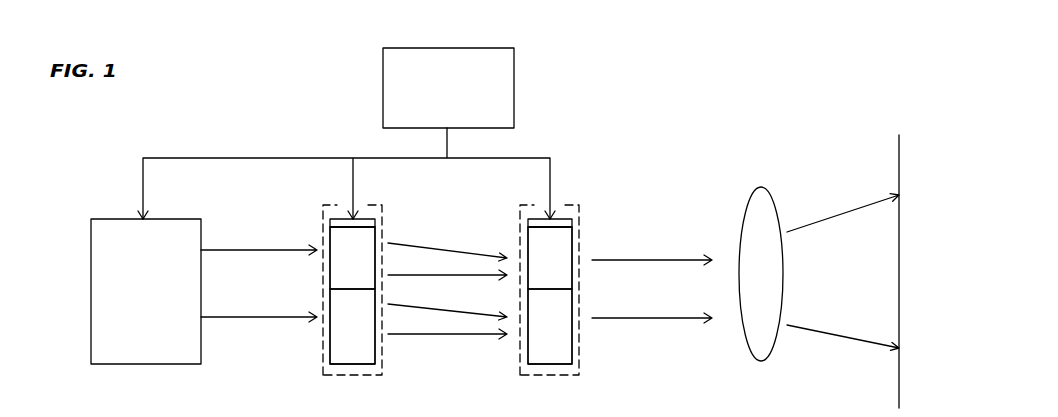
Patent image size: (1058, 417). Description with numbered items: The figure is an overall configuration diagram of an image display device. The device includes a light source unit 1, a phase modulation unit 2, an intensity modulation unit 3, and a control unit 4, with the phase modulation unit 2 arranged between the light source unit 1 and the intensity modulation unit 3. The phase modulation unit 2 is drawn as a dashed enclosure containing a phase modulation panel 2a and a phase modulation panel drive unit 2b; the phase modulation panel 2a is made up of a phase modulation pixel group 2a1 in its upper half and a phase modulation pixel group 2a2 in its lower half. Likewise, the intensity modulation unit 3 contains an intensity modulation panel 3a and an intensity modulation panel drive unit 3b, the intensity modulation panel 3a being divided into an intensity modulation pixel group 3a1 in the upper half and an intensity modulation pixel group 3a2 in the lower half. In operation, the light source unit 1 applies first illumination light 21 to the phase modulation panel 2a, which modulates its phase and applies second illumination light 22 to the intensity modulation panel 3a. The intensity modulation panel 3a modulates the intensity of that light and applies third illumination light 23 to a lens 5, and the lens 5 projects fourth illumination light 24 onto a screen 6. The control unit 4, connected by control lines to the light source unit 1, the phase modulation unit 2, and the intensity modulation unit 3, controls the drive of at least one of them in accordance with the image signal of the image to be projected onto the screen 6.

The light source unit 1 is at (118, 219).
The phase modulation unit 2 is at (325, 206).
The phase modulation panel 2a is at (332, 241).
The phase modulation pixel group 2a1 is at (336, 278).
The phase modulation pixel group 2a2 is at (336, 351).
The phase modulation panel drive unit 2b is at (368, 223).
The intensity modulation unit 3 is at (522, 206).
The intensity modulation panel 3a is at (530, 240).
The intensity modulation pixel group 3a1 is at (566, 252).
The intensity modulation pixel group 3a2 is at (566, 354).
The intensity modulation panel drive unit 3b is at (565, 223).
The control unit 4 is at (383, 87).
The lens 5 is at (750, 200).
The screen 6 is at (899, 165).
The first illumination light 21 is at (251, 347).
The second illumination light 22 is at (449, 346).
The third illumination light 23 is at (648, 357).
The fourth illumination light 24 is at (844, 362).